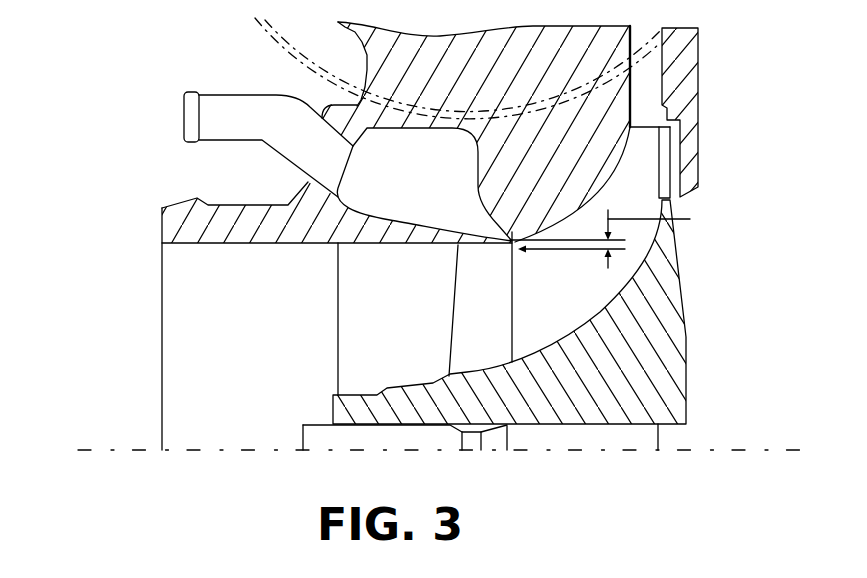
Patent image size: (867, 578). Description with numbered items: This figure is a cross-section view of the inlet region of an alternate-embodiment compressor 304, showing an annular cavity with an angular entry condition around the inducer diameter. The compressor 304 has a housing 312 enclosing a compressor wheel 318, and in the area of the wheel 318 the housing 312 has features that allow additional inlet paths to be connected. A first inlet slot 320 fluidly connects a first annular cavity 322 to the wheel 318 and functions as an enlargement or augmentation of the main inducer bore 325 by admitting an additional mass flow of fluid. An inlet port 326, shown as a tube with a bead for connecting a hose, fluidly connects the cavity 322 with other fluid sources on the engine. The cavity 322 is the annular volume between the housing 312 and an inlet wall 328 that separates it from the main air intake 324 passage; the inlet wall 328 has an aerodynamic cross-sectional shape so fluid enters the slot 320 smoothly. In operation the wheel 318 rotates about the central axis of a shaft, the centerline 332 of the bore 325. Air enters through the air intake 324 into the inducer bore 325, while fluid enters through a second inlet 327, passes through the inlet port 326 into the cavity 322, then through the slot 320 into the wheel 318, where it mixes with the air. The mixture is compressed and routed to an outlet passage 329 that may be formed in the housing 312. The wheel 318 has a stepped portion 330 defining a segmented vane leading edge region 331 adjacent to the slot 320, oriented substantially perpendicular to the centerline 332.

The compressor 304 is at (111, 477).
The housing 312 is at (510, 98).
The compressor wheel 318 is at (646, 387).
The first inlet slot 320 is at (512, 258).
The first annular cavity 322 is at (415, 194).
The main air intake 324 is at (153, 338).
The inducer bore 325 is at (257, 350).
The inlet port 326 is at (276, 102).
The second inlet 327 is at (177, 112).
The inlet wall 328 is at (423, 243).
The outlet passage 329 is at (652, 94).
The stepped portion 330 is at (523, 253).
The segmented vane leading edge region 331 is at (690, 219).
The shaft centerline 332 is at (688, 452).